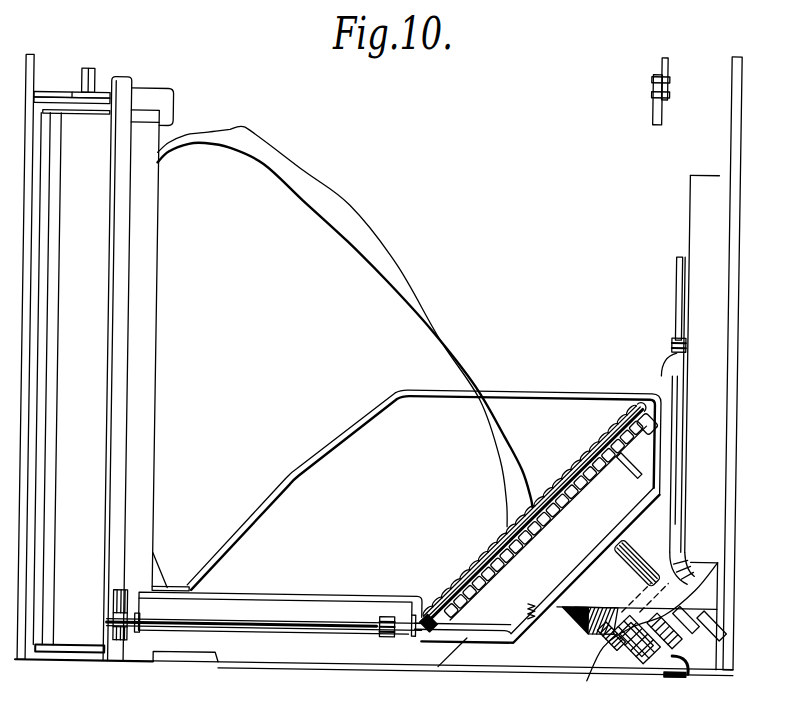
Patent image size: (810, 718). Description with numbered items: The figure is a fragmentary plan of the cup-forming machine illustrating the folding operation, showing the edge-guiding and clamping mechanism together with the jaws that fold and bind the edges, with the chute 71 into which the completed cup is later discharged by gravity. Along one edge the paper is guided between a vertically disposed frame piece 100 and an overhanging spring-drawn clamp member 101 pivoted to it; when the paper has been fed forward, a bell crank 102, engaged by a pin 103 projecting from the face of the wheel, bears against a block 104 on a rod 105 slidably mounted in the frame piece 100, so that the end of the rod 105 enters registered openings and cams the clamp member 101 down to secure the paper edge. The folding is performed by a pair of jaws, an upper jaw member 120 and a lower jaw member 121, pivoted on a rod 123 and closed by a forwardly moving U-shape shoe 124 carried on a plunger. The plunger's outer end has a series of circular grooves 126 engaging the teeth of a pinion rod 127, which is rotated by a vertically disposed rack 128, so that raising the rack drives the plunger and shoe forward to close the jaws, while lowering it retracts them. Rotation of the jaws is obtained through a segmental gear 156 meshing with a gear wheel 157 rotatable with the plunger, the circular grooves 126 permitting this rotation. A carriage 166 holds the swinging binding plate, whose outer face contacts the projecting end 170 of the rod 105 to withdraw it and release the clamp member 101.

The chute 71 is at (381, 310).
The frame piece 100 is at (308, 599).
The clamp member 101 is at (299, 640).
The bell crank 102 is at (674, 284).
The pin 103 is at (671, 341).
The block 104 is at (394, 638).
The rod 105 is at (333, 629).
The upper jaw member 120 is at (556, 478).
The lower jaw member 121 is at (580, 512).
The rod 123 is at (492, 564).
The U-shape shoe 124 is at (518, 601).
The circular grooves 126 is at (659, 661).
The pinion rod 127 is at (693, 611).
The rack 128 is at (718, 623).
The segmental gear 156 is at (690, 554).
The gear wheel 157 is at (609, 647).
The carriage 166 is at (78, 637).
The projecting end 170 is at (115, 644).